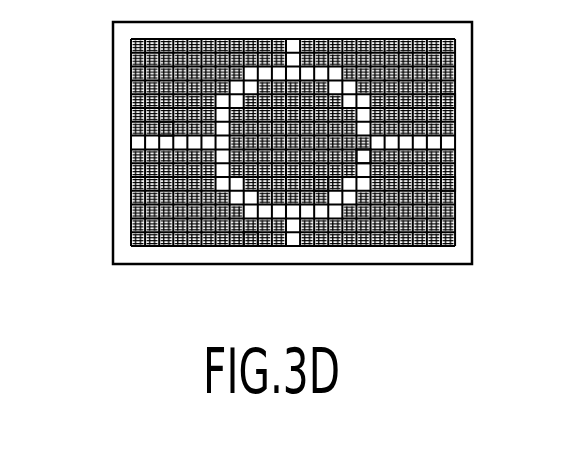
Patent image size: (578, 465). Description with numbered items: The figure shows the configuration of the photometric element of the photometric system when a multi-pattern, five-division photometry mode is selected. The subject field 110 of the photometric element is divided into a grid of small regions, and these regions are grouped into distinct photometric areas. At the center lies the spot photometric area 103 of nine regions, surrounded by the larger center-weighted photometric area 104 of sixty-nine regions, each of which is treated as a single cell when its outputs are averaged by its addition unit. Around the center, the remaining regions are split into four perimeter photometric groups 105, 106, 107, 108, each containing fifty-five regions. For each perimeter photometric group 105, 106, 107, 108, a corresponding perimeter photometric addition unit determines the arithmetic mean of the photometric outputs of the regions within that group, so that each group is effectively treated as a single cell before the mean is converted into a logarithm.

The subject field 110 is at (450, 51).
The perimeter photometric group 106 is at (450, 101).
The spot photometric area 103 is at (302, 150).
The perimeter photometric group 107 is at (453, 180).
The perimeter photometric group 105 is at (165, 124).
The center-weighted photometric area 104 is at (318, 178).
The perimeter photometric group 108 is at (245, 240).